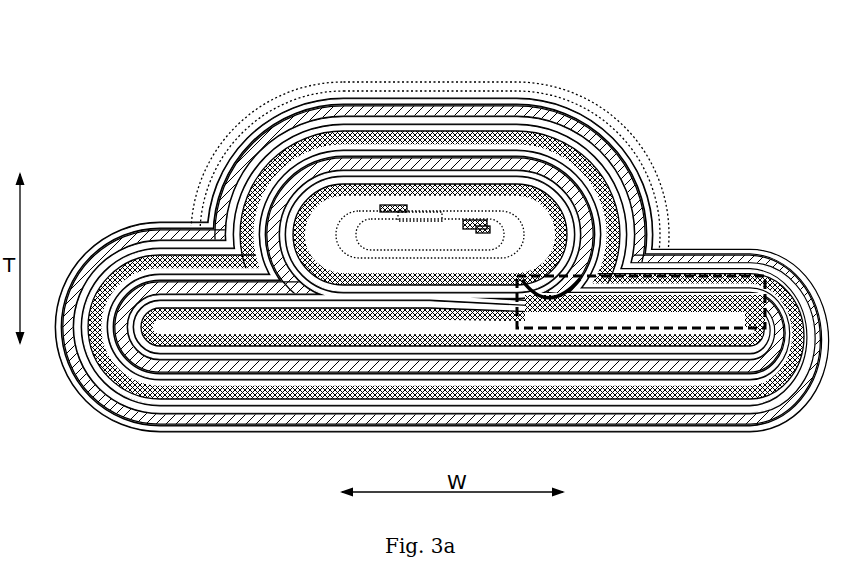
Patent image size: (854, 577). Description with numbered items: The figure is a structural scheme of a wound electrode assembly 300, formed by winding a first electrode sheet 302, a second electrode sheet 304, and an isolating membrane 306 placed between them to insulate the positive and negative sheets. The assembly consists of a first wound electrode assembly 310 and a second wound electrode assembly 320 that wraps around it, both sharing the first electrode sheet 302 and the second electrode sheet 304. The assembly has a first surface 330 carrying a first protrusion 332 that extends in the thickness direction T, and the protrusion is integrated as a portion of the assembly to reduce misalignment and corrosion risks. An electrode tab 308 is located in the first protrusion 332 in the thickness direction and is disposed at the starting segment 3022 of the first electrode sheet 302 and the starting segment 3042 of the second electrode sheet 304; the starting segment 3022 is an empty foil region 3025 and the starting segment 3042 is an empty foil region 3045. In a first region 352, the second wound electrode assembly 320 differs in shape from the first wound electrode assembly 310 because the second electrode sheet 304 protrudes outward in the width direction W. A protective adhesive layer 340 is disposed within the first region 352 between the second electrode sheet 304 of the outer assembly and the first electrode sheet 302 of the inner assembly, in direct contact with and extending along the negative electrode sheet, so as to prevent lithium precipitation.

The wound electrode assembly 300 is at (117, 37).
The first electrode sheet 302 is at (573, 200).
The second electrode sheet 304 is at (620, 247).
The isolating membrane 306 is at (532, 152).
The electrode tab 308 is at (385, 207).
The first wound electrode assembly 310 is at (335, 187).
The second wound electrode assembly 320 is at (173, 253).
The first surface 330 is at (197, 227).
The first protrusion 332 is at (237, 133).
The protective adhesive layer 340 is at (549, 303).
The first region 352 is at (633, 331).
The starting segment 3022 is at (375, 212).
The empty foil region 3025 is at (417, 210).
The starting segment 3042 is at (418, 228).
The empty foil region 3045 is at (453, 225).